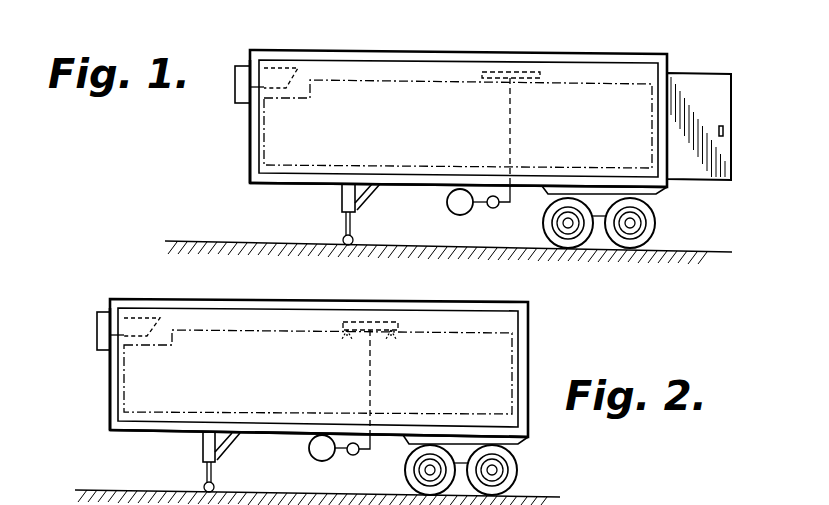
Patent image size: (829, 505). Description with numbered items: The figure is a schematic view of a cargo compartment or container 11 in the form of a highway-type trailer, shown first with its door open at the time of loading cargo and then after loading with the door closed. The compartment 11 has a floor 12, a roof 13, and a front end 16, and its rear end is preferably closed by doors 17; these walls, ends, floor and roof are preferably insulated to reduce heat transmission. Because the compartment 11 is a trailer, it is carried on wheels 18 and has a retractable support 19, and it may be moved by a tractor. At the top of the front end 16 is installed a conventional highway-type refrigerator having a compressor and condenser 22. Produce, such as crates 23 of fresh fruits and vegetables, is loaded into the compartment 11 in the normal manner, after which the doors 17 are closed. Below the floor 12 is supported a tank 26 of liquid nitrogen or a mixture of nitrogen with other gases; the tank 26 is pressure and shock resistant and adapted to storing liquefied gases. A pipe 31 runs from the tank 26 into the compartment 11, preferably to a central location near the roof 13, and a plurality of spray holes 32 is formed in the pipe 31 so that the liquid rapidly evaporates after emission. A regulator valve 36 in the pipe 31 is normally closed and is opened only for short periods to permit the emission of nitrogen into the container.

In FIG. 1, the cargo compartment 11 is at (388, 50).
In FIG. 2, the cargo compartment 11 is at (198, 298).
In FIG. 1, the floor 12 is at (413, 186).
In FIG. 2, the floor 12 is at (270, 434).
In FIG. 1, the roof 13 is at (555, 52).
In FIG. 2, the roof 13 is at (355, 302).
In FIG. 1, the front end 16 is at (250, 132).
In FIG. 2, the front end 16 is at (110, 378).
In FIG. 1, the doors 17 is at (722, 86).
In FIG. 1, the wheels 18 is at (618, 241).
In FIG. 2, the wheels 18 is at (478, 490).
In FIG. 1, the retractable support 19 is at (343, 197).
In FIG. 2, the retractable support 19 is at (205, 443).
In FIG. 1, the compressor and condenser 22 is at (243, 66).
In FIG. 2, the compressor and condenser 22 is at (97, 325).
In FIG. 1, the crates 23 is at (620, 92).
In FIG. 2, the crates 23 is at (445, 348).
In FIG. 1, the tank 26 is at (449, 213).
In FIG. 2, the tank 26 is at (312, 457).
In FIG. 1, the pipe 31 is at (512, 136).
In FIG. 2, the spray holes 32 is at (391, 336).
In FIG. 1, the regulator valve 36 is at (494, 209).
In FIG. 2, the regulator valve 36 is at (353, 456).